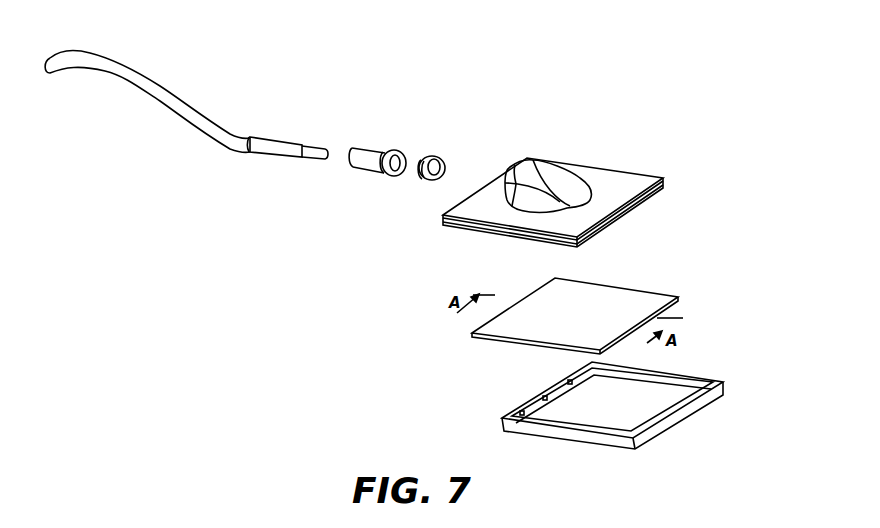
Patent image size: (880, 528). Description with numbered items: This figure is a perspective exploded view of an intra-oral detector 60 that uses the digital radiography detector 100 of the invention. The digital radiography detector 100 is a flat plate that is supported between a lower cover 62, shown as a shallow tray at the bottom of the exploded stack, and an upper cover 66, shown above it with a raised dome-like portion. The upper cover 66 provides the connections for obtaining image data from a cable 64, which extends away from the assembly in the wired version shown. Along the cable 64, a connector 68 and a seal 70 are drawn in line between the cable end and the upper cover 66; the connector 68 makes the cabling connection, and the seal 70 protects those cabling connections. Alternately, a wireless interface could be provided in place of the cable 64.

The intra-oral detector 60 is at (466, 383).
The lower cover 62 is at (686, 369).
The cable 64 is at (281, 137).
The upper cover 66 is at (627, 170).
The connector 68 is at (372, 146).
The seal 70 is at (441, 155).
The digital radiography detector 100 is at (640, 288).